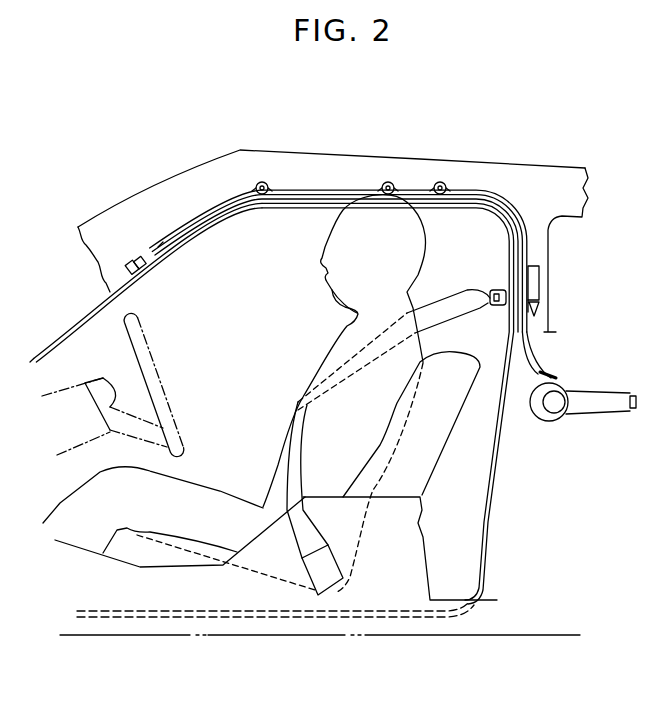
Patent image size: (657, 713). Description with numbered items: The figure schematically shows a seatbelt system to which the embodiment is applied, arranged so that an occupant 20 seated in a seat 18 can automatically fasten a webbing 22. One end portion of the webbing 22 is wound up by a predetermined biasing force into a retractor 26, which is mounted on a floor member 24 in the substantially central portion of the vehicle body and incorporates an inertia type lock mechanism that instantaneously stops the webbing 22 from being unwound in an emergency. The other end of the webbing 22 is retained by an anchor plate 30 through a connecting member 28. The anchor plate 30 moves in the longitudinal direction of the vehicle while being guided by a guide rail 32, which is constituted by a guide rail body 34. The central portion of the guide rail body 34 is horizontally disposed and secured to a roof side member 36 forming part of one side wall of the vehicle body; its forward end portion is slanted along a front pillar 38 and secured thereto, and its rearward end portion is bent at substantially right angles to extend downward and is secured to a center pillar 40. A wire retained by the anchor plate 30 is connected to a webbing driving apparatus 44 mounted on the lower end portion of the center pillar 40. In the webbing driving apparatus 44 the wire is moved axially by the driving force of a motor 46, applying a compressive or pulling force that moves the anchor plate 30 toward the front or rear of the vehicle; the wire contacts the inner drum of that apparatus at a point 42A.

The seat 18 is at (428, 453).
The occupant 20 is at (335, 308).
The webbing 22 is at (472, 307).
The floor member 24 is at (397, 640).
The retractor 26 is at (330, 593).
The connecting member 28 is at (497, 293).
The anchor plate 30 is at (510, 293).
The guide rail 32 is at (419, 177).
The guide rail body 34 is at (352, 190).
The roof side member 36 is at (313, 160).
The front pillar 38 is at (76, 323).
The center pillar 40 is at (548, 246).
The point 42A is at (540, 370).
The webbing driving apparatus 44 is at (571, 436).
The motor 46 is at (615, 412).